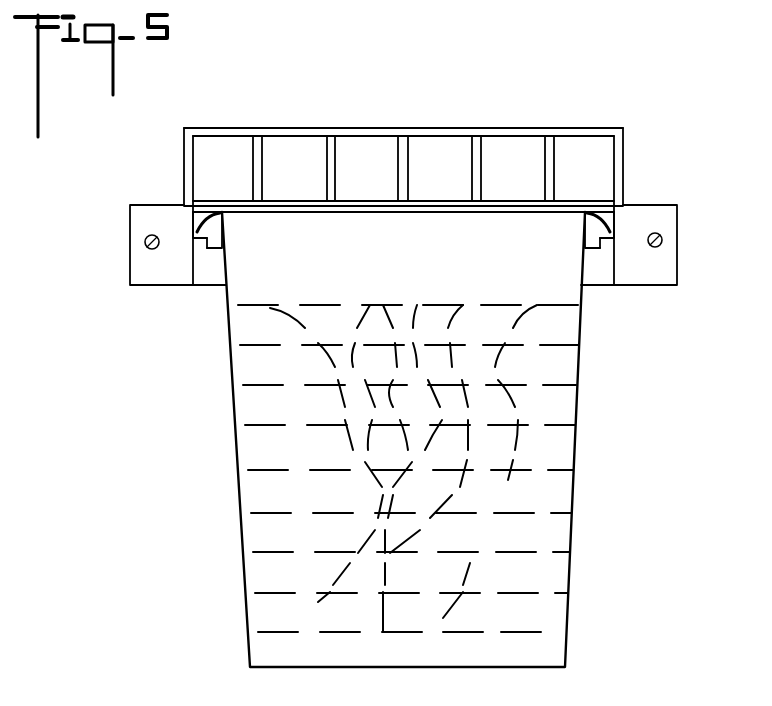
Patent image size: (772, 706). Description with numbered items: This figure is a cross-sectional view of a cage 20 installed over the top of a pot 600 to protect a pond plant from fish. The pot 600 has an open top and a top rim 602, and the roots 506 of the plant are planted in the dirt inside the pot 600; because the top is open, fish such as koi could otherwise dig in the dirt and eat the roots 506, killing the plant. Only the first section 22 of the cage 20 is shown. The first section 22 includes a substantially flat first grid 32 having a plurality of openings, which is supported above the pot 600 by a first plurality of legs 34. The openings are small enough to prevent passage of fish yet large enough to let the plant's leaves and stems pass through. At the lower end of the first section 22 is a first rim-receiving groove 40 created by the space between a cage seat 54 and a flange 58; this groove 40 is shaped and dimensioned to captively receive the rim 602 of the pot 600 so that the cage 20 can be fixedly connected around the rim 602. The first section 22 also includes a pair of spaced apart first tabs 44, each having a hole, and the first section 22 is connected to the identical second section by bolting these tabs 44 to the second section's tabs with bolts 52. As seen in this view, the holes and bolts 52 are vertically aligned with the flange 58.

The cage 20 is at (333, 119).
The first section 22 is at (646, 80).
The first grid 32 is at (404, 131).
The first plurality of legs 34 is at (330, 165).
The first rim-receiving groove 40 is at (205, 230).
The first tabs 44 is at (143, 258).
The bolts 52 is at (146, 241).
The cage seat 54 is at (217, 207).
The flange 58 is at (205, 242).
The pot 600 is at (231, 353).
The top rim 602 is at (197, 215).
The roots 506 is at (490, 541).